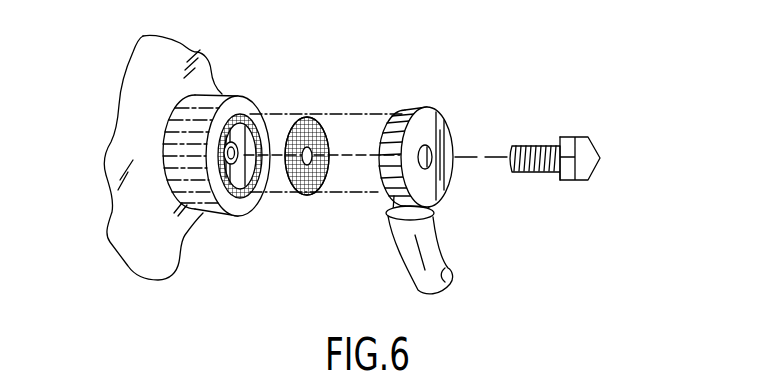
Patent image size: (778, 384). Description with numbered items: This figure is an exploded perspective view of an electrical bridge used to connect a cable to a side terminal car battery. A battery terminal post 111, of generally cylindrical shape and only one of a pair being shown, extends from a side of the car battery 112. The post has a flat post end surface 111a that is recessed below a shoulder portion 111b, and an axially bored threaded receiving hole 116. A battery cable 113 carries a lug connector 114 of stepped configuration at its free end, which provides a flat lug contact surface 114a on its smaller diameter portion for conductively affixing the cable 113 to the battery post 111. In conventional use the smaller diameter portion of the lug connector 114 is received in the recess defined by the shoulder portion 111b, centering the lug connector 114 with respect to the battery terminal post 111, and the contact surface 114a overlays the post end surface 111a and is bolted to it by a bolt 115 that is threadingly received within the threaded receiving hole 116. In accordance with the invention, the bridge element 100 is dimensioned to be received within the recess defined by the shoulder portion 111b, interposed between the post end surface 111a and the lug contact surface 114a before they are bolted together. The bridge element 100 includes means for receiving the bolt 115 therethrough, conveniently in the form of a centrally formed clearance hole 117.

The bridge element 100 is at (322, 110).
The battery terminal post 111 is at (193, 175).
The post end surface 111a is at (233, 130).
The shoulder portion 111b is at (260, 166).
The car battery 112 is at (190, 43).
The battery cable 113 is at (446, 236).
The lug connector 114 is at (460, 180).
The lug contact surface 114a is at (384, 192).
The bolt 115 is at (587, 133).
The threaded receiving hole 116 is at (240, 185).
The clearance hole 117 is at (335, 143).